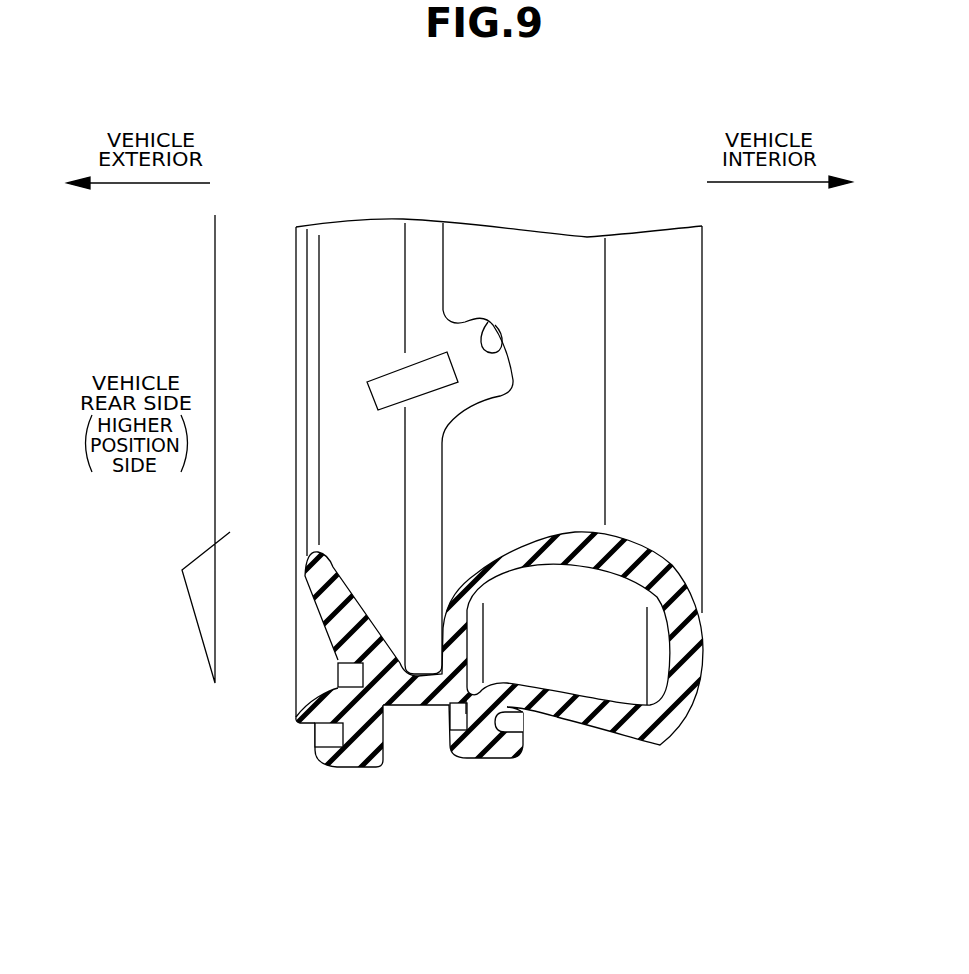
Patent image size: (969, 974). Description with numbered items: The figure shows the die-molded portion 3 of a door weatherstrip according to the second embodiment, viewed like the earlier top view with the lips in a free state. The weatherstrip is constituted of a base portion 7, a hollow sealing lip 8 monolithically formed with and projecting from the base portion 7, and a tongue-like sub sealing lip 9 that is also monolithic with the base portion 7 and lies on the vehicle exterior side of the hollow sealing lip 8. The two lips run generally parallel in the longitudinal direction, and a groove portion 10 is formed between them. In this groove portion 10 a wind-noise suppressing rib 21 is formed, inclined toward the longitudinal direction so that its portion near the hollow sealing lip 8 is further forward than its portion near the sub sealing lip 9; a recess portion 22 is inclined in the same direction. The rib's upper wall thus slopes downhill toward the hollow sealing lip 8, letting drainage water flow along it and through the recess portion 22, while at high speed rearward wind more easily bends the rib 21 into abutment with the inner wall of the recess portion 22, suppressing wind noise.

The die-molded portion 3 is at (709, 340).
The groove portion 10 is at (423, 243).
The wind-noise suppressing rib 21 is at (390, 370).
The recess portion 22 is at (488, 343).
The hollow sealing lip 8 is at (683, 536).
The sub sealing lip 9 is at (315, 577).
The base portion 7 is at (357, 758).